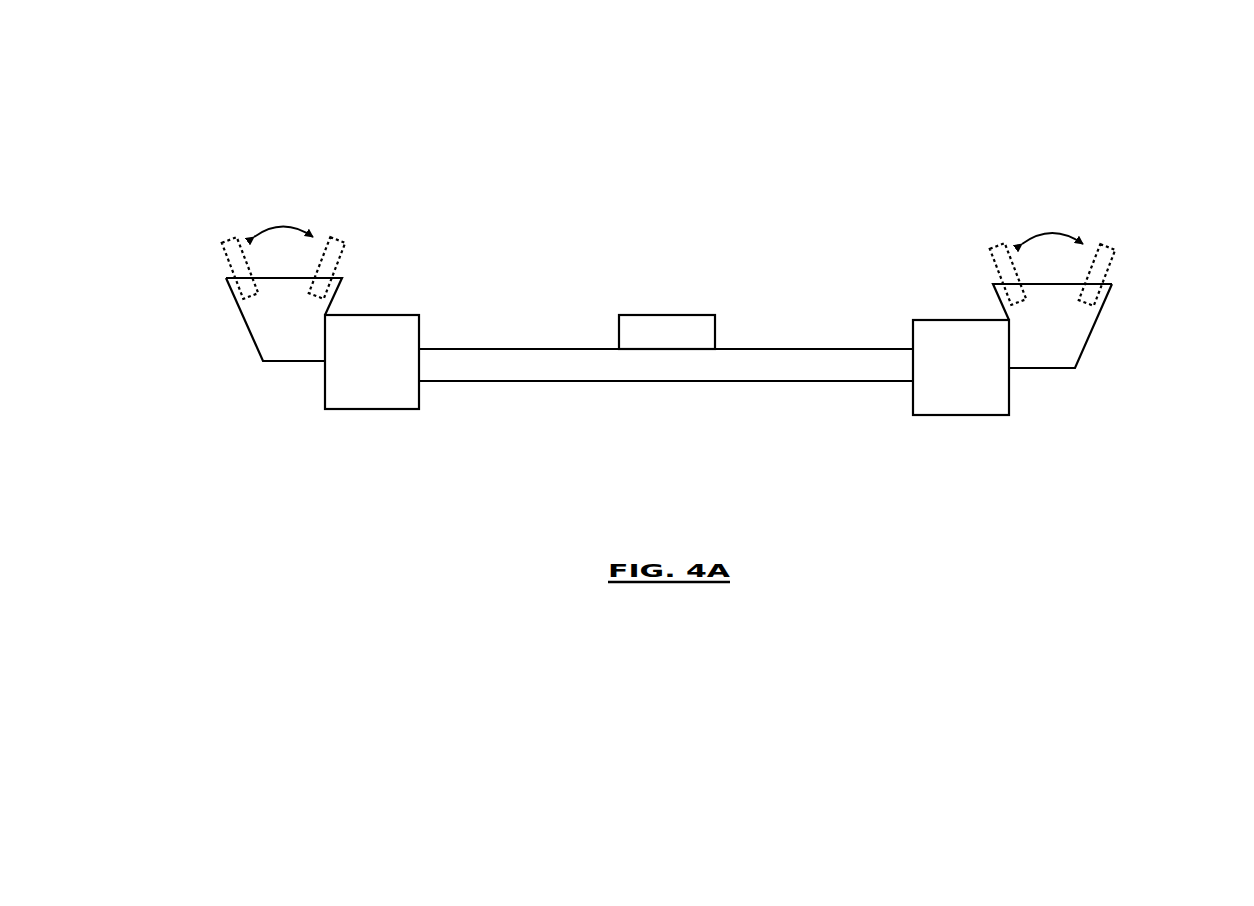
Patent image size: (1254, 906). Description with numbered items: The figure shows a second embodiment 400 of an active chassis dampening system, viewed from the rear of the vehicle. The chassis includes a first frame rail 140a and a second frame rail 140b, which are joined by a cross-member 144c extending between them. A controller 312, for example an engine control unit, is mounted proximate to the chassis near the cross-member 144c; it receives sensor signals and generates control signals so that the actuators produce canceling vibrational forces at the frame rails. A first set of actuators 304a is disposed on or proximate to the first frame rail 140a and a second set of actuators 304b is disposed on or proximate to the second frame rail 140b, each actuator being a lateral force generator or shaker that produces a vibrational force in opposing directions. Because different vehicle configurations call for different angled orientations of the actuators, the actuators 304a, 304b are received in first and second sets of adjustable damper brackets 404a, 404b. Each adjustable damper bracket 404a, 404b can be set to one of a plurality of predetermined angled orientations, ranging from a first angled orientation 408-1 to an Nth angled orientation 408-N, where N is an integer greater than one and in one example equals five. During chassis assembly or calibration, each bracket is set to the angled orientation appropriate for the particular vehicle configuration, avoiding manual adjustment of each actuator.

The second embodiment of the active chassis dampening system 400 is at (271, 58).
The first set of one or more actuators 304a is at (229, 238).
The second set of one or more actuators 304b is at (998, 245).
The first set of adjustable damper brackets 404a is at (237, 307).
The second set of adjustable damper brackets 404b is at (1103, 313).
The first predetermined angled orientation 408-1 is at (256, 314).
The Nth predetermined angled orientation 408-N is at (310, 315).
The first frame rail 140a is at (372, 410).
The second frame rail 140b is at (962, 417).
The controller 312 is at (670, 315).
The cross-member 144c is at (676, 382).